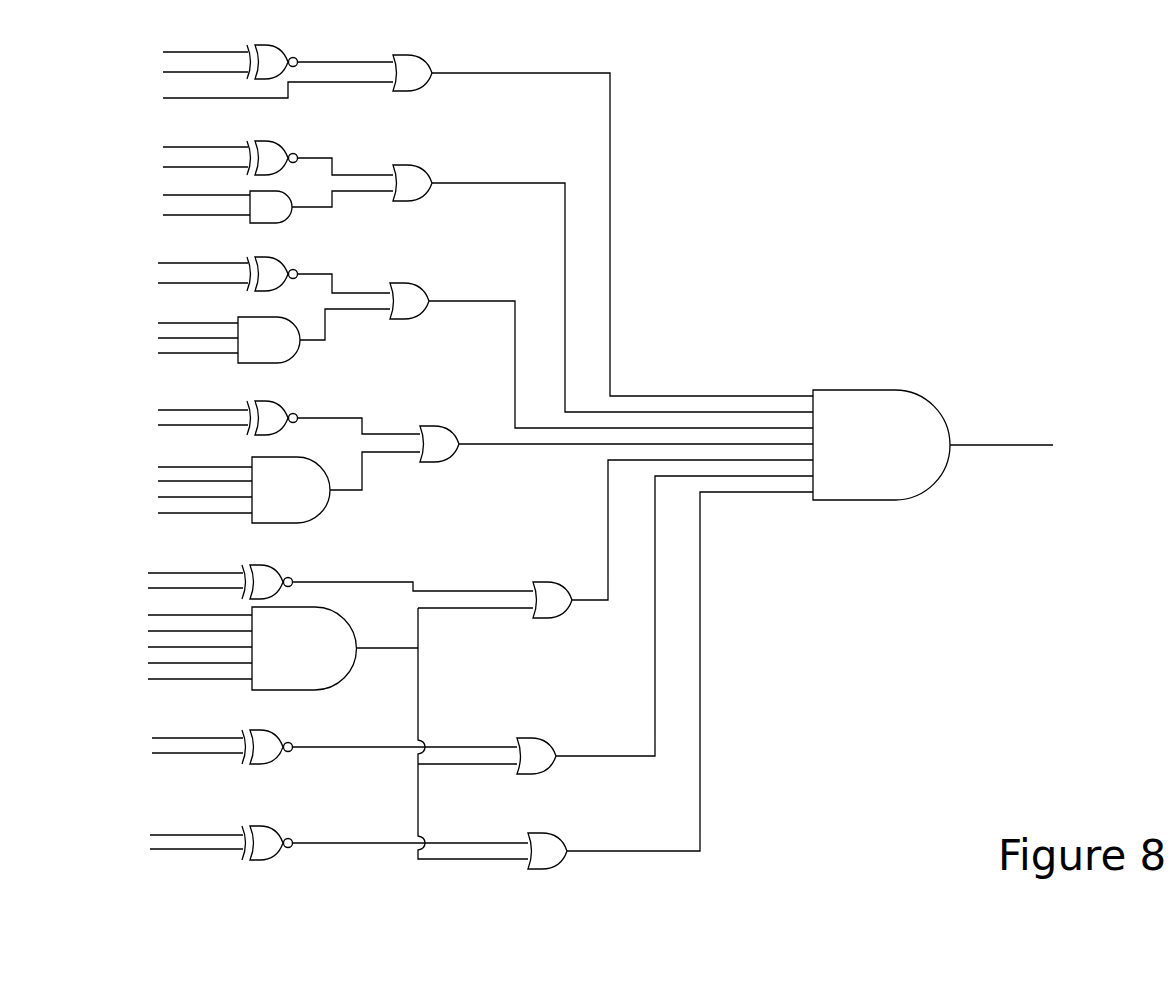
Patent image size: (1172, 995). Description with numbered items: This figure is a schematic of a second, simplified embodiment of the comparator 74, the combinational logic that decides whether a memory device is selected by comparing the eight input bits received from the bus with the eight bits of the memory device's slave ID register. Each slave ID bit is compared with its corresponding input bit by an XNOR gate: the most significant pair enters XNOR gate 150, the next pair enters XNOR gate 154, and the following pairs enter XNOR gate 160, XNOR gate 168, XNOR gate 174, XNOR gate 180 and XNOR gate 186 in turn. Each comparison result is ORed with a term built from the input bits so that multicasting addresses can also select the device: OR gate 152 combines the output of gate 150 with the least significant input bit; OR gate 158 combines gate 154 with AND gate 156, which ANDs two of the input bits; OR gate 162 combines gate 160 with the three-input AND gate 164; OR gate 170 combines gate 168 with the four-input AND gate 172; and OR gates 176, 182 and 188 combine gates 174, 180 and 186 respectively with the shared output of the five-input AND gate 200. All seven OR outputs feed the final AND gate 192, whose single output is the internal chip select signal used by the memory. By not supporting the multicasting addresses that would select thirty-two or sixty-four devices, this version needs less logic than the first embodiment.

The comparator 74 is at (744, 316).
The XNOR gate 150 is at (320, 62).
The OR gate 152 is at (603, 225).
The XNOR gate 154 is at (320, 158).
The AND gate 156 is at (321, 207).
The OR gate 158 is at (603, 288).
The XNOR gate 160 is at (318, 275).
The OR gate 162 is at (601, 355).
The AND gate 164 is at (314, 336).
The XNOR gate 168 is at (333, 418).
The OR gate 170 is at (616, 444).
The AND gate 172 is at (336, 487).
The XNOR gate 174 is at (387, 582).
The OR gate 176 is at (673, 539).
The XNOR gate 180 is at (379, 747).
The OR gate 182 is at (665, 625).
The XNOR gate 186 is at (385, 843).
The OR gate 188 is at (670, 680).
The AND gate 192 is at (933, 445).
The AND gate 200 is at (335, 648).